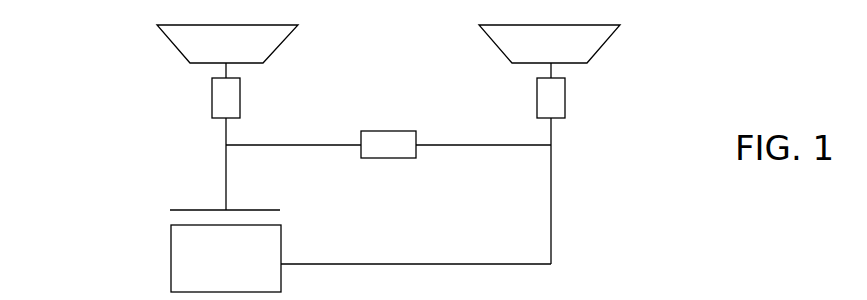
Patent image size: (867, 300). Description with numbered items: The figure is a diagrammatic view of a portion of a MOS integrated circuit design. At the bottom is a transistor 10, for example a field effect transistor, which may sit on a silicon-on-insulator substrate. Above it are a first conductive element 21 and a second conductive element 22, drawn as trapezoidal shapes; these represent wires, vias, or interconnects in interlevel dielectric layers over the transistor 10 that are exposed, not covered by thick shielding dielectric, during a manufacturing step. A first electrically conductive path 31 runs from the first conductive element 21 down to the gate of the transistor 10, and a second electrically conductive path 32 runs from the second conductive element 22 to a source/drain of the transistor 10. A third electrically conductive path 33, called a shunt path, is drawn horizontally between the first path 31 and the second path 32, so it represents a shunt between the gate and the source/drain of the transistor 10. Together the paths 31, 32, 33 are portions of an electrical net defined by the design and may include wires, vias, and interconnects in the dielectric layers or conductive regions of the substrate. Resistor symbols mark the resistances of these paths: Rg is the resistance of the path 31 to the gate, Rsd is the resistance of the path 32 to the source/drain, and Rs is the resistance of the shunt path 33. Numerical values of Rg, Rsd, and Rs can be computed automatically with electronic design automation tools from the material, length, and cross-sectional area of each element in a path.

The transistor 10 is at (360, 251).
The first conductive element 21 is at (227, 51).
The second conductive element 22 is at (549, 51).
The first electrically conductive path 31 is at (224, 161).
The second electrically conductive path 32 is at (553, 197).
The third electrically conductive path 33 is at (322, 148).
The electrical resistance of the first path Rg is at (212, 97).
The electrical resistance of the shunt path Rs is at (384, 131).
The electrical resistance of the second path Rsd is at (565, 103).